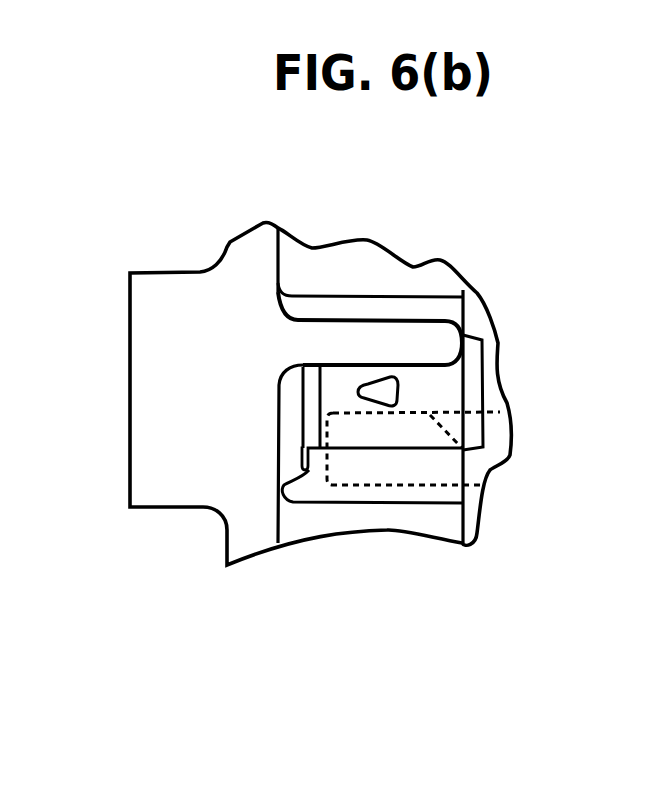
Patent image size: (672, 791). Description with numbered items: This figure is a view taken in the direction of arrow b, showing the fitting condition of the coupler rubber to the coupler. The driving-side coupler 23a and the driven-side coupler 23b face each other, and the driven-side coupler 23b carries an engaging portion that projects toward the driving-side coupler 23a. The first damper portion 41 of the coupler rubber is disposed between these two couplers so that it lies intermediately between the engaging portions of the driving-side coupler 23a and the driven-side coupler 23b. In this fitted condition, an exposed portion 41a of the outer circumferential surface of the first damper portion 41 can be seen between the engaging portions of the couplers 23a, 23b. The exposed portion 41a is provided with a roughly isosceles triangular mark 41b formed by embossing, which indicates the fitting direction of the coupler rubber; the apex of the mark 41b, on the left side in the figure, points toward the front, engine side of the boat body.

The driving-side coupler 23a is at (332, 342).
The driven-side coupler 23b is at (462, 448).
The first damper portion 41 is at (492, 338).
The exposed portion 41a is at (452, 398).
The mark 41b is at (388, 388).
The arrow b is at (671, 408).